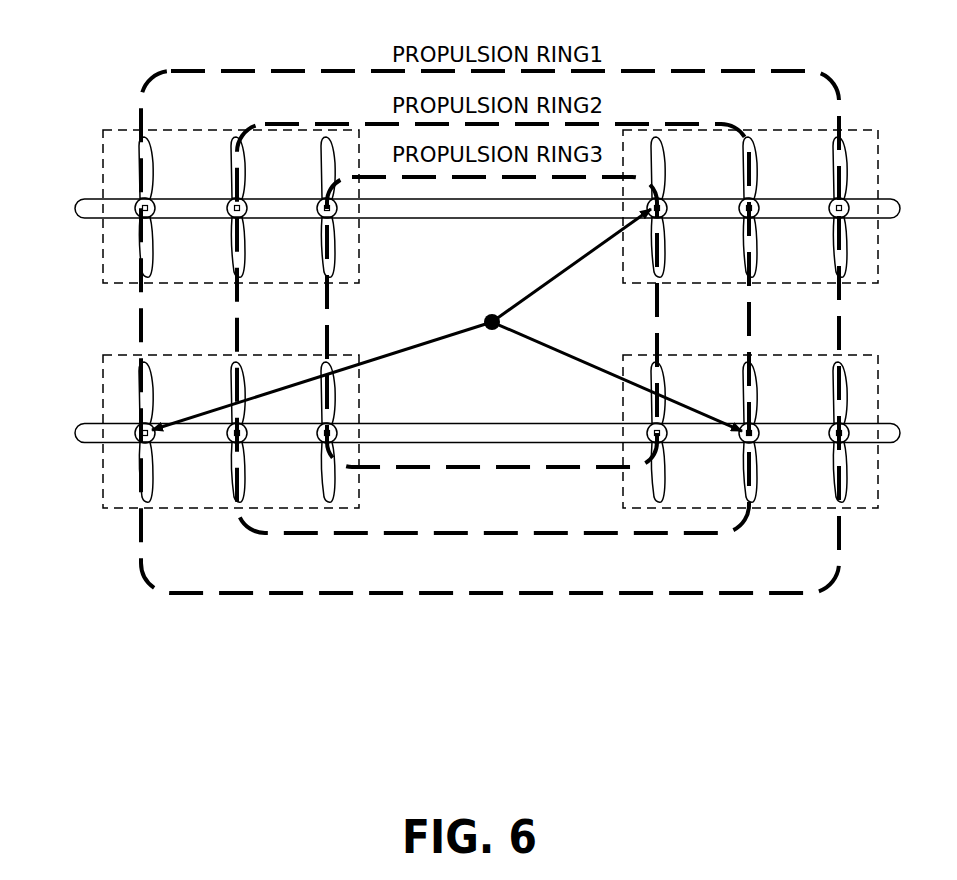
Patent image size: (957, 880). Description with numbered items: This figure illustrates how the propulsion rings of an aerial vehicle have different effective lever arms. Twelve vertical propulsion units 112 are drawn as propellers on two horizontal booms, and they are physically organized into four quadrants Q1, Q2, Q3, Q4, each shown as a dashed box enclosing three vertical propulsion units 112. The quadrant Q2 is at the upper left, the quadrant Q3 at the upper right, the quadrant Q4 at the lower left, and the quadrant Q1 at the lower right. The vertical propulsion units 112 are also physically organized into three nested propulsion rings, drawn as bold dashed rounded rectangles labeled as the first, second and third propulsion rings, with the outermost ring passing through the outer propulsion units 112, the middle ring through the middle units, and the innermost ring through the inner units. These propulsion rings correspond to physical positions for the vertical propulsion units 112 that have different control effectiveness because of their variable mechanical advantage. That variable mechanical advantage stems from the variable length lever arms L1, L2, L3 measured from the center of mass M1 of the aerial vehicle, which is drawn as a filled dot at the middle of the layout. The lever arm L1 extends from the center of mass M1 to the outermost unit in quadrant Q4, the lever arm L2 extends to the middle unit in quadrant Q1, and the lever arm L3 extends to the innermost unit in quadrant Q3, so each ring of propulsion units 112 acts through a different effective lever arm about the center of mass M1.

The vertical propulsion unit 112 is at (305, 150).
The center of mass M1 is at (489, 328).
The lever arm L1 is at (322, 376).
The lever arm L2 is at (617, 376).
The lever arm L3 is at (571, 265).
The quadrant Q1 is at (750, 431).
The quadrant Q2 is at (231, 206).
The quadrant Q3 is at (750, 206).
The quadrant Q4 is at (231, 431).